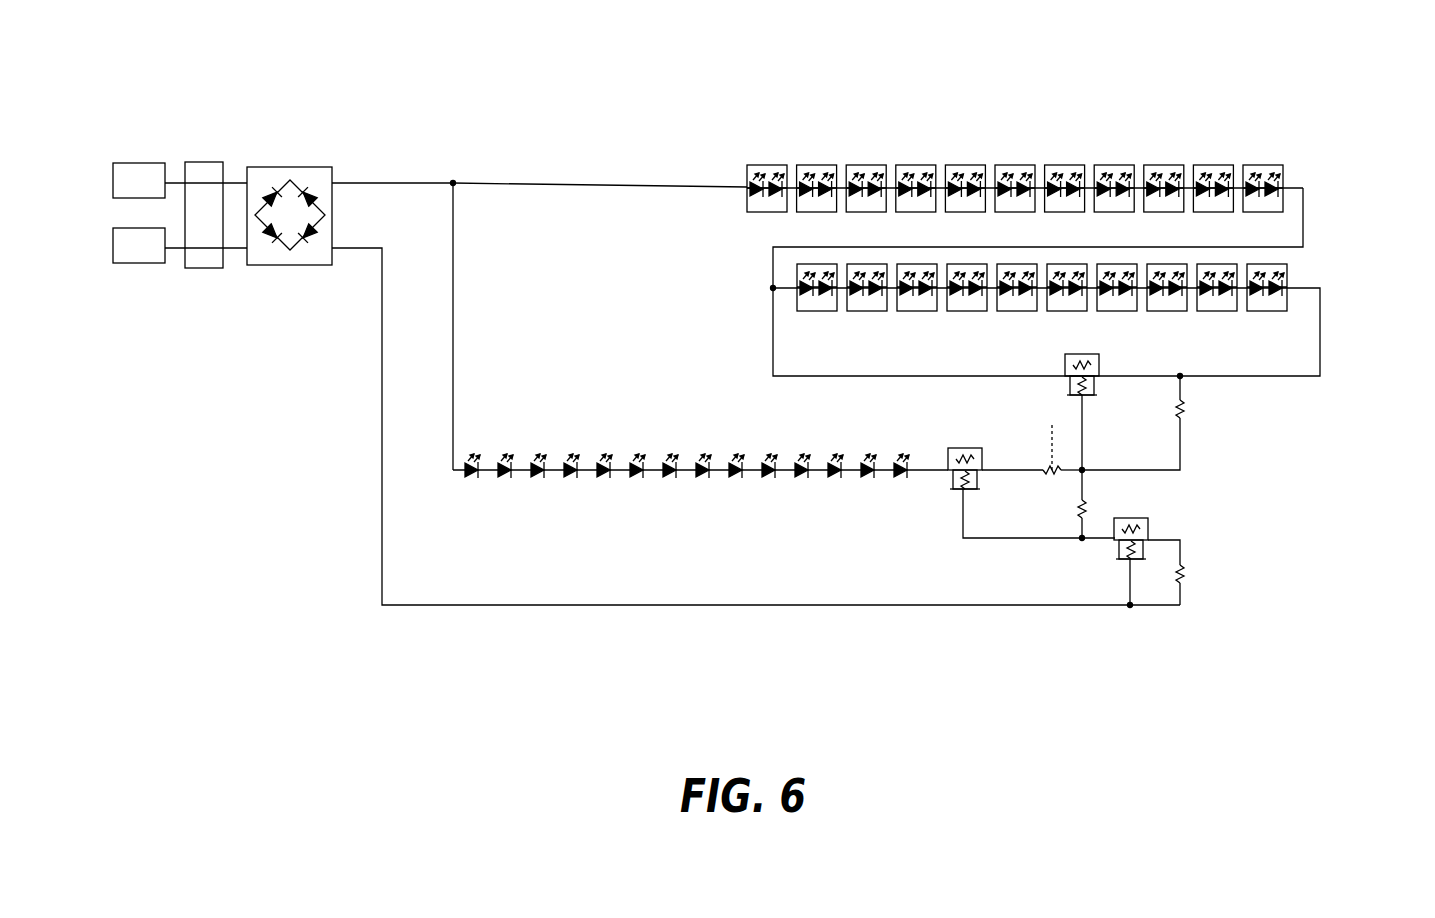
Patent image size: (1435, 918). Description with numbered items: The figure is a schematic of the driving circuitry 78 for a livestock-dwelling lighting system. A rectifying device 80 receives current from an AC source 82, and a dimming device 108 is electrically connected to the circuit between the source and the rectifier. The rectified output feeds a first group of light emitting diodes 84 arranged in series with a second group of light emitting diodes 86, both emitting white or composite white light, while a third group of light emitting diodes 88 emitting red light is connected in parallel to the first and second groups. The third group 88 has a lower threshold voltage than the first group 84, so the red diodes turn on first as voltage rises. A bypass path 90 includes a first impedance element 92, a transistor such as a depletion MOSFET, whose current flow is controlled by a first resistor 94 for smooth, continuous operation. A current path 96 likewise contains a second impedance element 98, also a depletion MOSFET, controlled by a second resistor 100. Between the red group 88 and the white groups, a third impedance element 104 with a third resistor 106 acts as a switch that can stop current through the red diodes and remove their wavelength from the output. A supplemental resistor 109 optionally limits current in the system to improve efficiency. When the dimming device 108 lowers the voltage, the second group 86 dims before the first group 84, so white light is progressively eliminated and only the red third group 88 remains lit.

The driving circuitry 78 is at (700, 112).
The rectifying device 80 is at (288, 167).
The AC source 82 is at (115, 115).
The first group of light emitting diodes 84 is at (1100, 118).
The second group of light emitting diodes 86 is at (1315, 283).
The third group of light emitting diodes 88 is at (718, 437).
The bypass path 90 is at (945, 360).
The first impedance element 92 is at (1100, 357).
The first resistor 94 is at (1180, 410).
The current path 96 is at (1278, 513).
The second impedance element 98 is at (1140, 525).
The second resistor 100 is at (1180, 575).
The third impedance element 104 is at (955, 455).
The third resistor 106 is at (1075, 510).
The dimming device 108 is at (205, 162).
The supplemental resistor 109 is at (1055, 433).